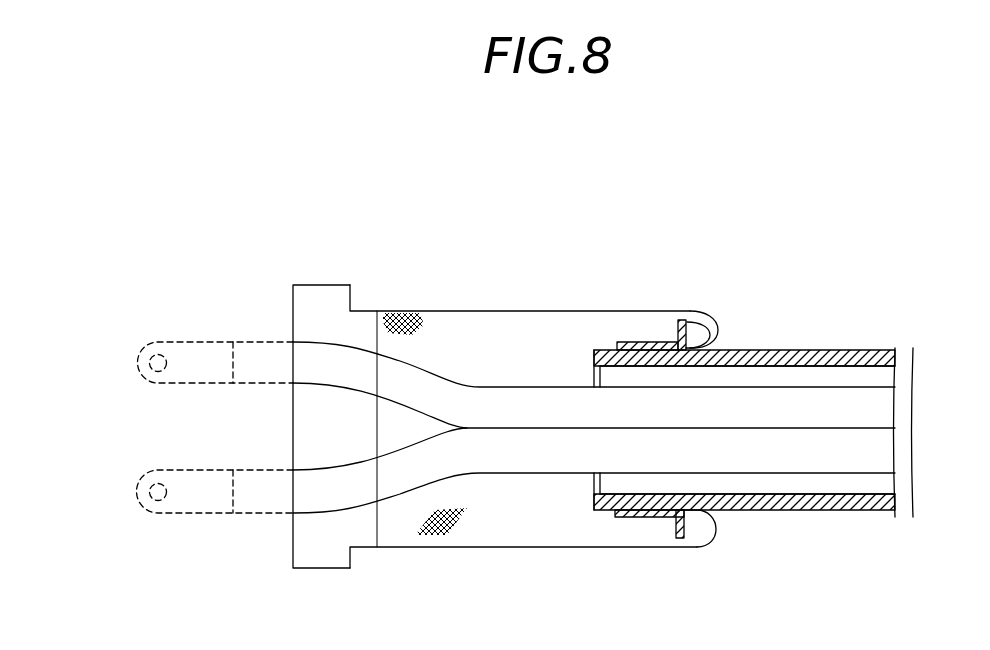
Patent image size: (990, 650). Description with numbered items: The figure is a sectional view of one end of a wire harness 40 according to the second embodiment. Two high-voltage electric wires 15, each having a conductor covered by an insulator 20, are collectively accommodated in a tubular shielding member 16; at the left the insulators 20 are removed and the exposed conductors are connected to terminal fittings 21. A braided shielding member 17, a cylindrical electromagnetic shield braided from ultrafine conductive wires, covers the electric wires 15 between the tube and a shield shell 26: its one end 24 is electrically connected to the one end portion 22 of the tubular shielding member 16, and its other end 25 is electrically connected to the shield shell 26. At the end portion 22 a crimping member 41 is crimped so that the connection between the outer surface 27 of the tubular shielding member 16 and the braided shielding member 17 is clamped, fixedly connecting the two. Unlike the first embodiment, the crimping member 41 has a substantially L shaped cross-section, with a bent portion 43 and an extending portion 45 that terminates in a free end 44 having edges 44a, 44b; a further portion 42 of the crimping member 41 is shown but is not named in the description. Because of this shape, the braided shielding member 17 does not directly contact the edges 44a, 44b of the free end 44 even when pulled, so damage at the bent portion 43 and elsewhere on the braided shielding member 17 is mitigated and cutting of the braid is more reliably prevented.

The wire harness 40 is at (93, 226).
The shield shell 26 is at (312, 285).
The braided shielding member 17 is at (453, 306).
The other end of braided shielding member 25 is at (387, 310).
The insulator 20 is at (495, 412).
The high-voltage electric wire 15 is at (889, 408).
The terminal fitting 21 is at (140, 362).
The one end portion of tubular shielding member 22 is at (603, 349).
The outer surface 27 is at (802, 350).
The tubular shielding member 16 is at (841, 344).
The crimping member 41 is at (768, 220).
The one end of braided shielding member 24 is at (620, 343).
The shell body 42 is at (652, 343).
The extending portion 45 is at (676, 343).
The edge of free end 44a is at (678, 319).
The free end 44 is at (690, 314).
The edge of free end 44b is at (713, 316).
The bent portion 43 is at (718, 338).